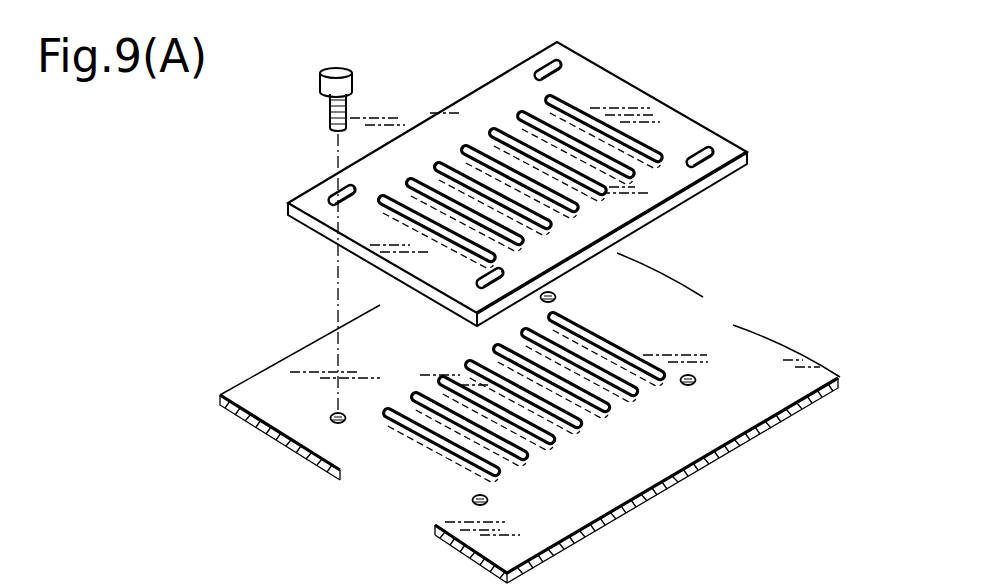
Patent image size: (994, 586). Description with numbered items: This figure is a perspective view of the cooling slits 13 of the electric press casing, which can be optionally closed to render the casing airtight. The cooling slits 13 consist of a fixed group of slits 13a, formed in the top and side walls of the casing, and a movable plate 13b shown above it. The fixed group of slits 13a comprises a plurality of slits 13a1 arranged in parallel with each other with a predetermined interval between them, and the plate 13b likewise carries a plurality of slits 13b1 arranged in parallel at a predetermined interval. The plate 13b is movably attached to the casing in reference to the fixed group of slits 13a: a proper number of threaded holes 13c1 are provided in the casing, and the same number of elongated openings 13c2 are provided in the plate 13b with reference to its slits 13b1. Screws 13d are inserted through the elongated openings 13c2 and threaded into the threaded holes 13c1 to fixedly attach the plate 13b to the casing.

The cooling slits 13 is at (261, 203).
The fixed group of slits 13a is at (652, 430).
The slits 13a1 is at (624, 348).
The plate 13b is at (637, 105).
The slits 13b1 is at (412, 178).
The threaded holes 13c1 is at (557, 297).
The elongated openings 13c2 is at (552, 62).
The screws 13d is at (327, 122).